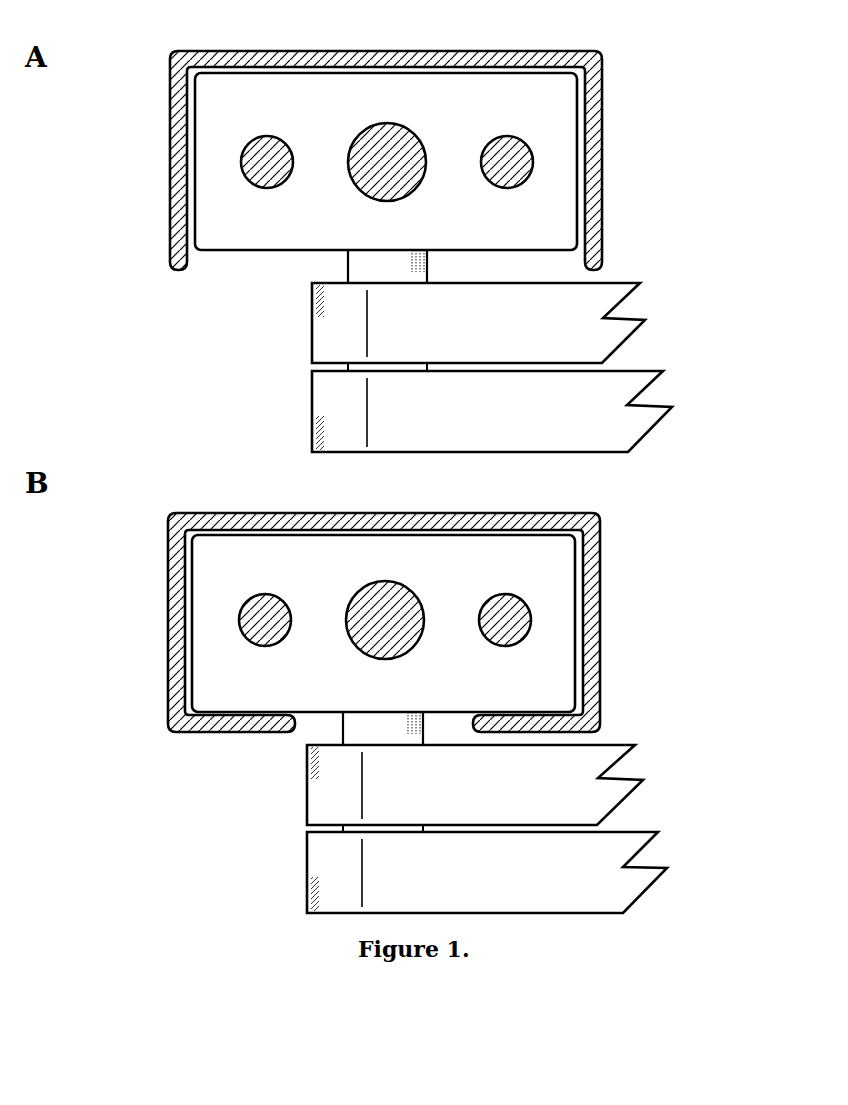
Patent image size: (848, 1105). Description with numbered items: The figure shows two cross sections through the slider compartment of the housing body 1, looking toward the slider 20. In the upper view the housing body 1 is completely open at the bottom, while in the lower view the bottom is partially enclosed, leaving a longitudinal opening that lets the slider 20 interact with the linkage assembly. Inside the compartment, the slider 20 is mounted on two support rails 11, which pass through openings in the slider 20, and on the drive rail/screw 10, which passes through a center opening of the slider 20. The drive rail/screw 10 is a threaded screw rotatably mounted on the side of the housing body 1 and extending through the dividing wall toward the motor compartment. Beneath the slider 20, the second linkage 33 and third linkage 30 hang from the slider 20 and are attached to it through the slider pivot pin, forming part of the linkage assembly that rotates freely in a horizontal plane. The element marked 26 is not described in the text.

The housing body 1 is at (655, 42).
The drive rail/screw 10 is at (405, 130).
The support rail 11 is at (257, 172).
The slider 20 is at (225, 227).
The insert body / stem 26 is at (355, 265).
The third linkage 30 is at (338, 313).
The second linkage 33 is at (333, 386).